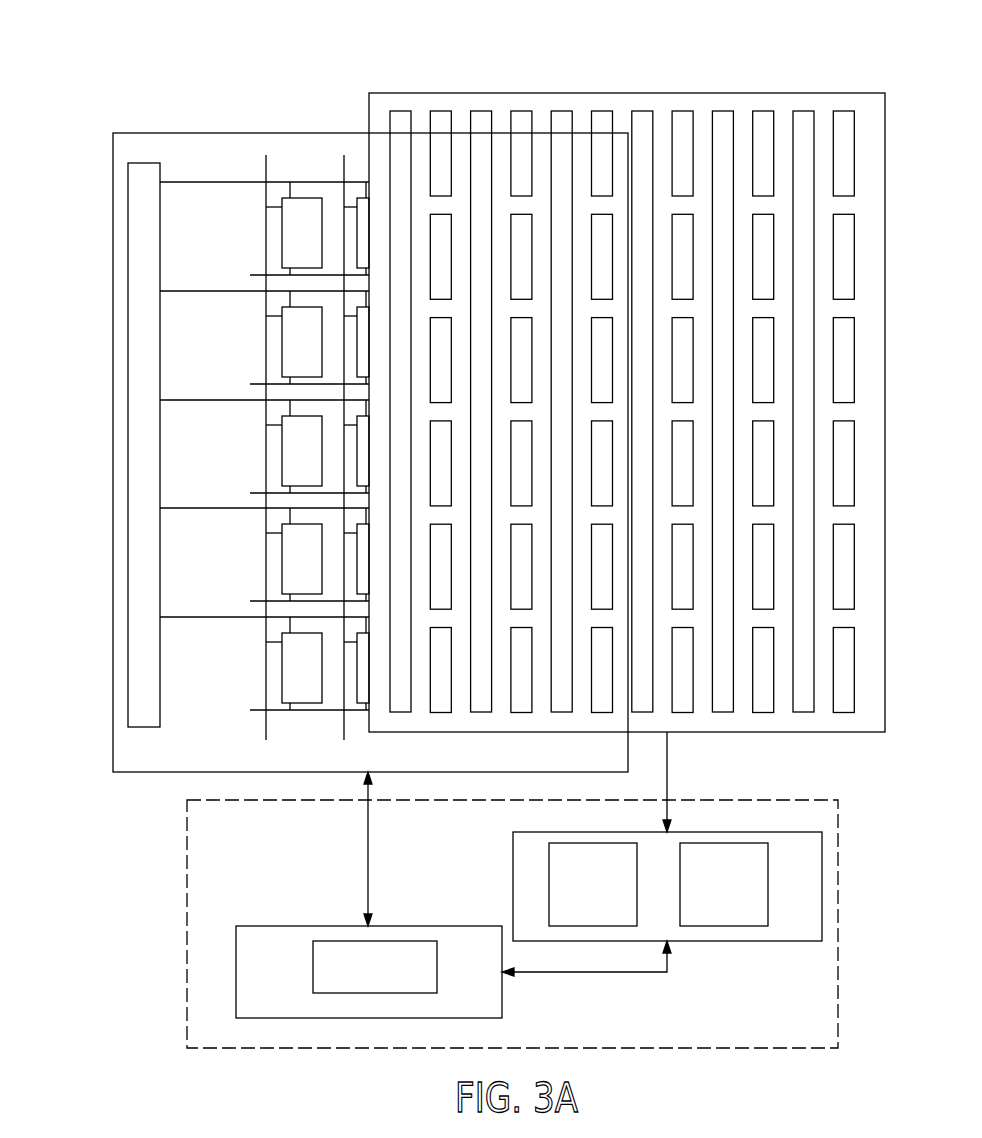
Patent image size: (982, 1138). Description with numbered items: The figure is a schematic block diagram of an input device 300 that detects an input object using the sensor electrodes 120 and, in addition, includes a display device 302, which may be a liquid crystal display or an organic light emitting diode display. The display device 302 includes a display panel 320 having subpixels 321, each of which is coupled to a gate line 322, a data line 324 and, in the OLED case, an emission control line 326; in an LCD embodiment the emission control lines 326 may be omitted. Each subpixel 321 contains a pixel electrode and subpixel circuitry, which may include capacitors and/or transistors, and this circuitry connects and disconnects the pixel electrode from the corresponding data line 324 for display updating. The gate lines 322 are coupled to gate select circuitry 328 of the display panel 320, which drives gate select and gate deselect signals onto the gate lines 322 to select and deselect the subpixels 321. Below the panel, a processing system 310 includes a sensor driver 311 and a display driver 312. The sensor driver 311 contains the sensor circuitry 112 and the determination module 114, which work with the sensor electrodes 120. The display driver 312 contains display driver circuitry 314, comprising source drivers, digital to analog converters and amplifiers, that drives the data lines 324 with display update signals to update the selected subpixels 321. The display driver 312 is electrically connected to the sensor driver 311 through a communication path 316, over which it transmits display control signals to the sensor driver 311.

The input device 300 is at (170, 52).
The display device 302 is at (118, 121).
The display panel 320 is at (128, 177).
The gate select circuitry 328 is at (135, 390).
The gate line 322 is at (258, 182).
The data line 324 is at (267, 158).
The subpixel 321 is at (275, 446).
The emission control line 326 is at (286, 465).
The sensor electrodes 120 is at (826, 103).
The processing system 310 is at (187, 846).
The sensor driver 311 is at (822, 854).
The sensor circuitry 112 is at (612, 894).
The determination module 114 is at (742, 894).
The display driver 312 is at (302, 926).
The display driver circuitry 314 is at (394, 978).
The communication path 316 is at (637, 972).